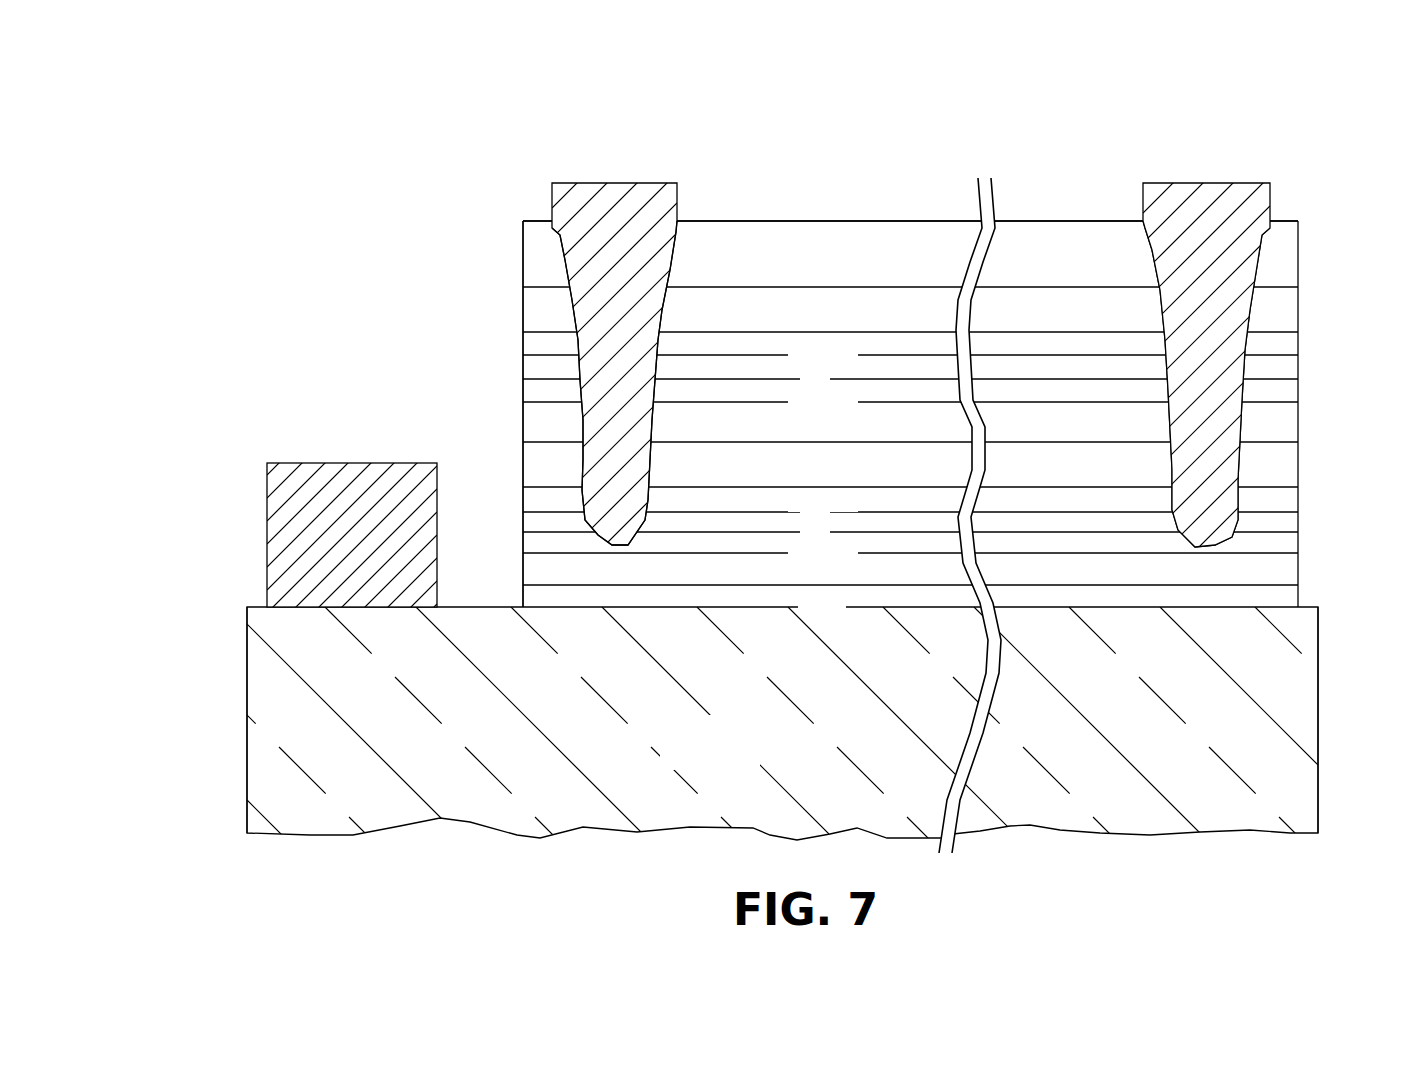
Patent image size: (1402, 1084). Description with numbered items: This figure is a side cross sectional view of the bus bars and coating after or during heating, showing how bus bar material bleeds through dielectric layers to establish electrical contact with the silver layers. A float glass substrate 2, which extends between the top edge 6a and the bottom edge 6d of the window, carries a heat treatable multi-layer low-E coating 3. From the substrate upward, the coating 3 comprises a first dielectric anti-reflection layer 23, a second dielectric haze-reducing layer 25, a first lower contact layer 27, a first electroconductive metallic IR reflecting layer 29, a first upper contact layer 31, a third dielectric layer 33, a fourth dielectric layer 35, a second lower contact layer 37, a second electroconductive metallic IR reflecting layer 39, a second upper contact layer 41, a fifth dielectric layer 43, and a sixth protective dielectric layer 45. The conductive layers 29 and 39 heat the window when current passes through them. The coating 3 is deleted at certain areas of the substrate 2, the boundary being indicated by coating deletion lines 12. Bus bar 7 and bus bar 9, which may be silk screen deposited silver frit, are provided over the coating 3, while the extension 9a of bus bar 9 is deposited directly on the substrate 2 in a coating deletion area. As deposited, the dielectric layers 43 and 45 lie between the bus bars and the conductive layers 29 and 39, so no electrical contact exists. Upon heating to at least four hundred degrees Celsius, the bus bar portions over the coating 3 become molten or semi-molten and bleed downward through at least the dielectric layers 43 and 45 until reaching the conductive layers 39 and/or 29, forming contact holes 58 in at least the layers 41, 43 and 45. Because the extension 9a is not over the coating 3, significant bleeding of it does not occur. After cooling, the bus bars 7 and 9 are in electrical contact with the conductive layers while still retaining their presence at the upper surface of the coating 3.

The substrate 2 is at (1287, 820).
The coating 3 is at (951, 410).
The top edge 6a is at (247, 790).
The bottom edge 6d is at (1320, 745).
The bus bar 7 is at (578, 193).
The bus bar 9 is at (1212, 192).
The extension of bus bar 9a is at (355, 497).
The coating deletion lines 12 is at (521, 338).
The first dielectric anti-reflection layer 23 is at (1257, 593).
The second dielectric haze-reducing layer 25 is at (1122, 572).
The first lower contact layer 27 is at (1287, 544).
The first electroconductive metallic IR reflecting layer 29 is at (1287, 521).
The first upper contact layer 31 is at (1285, 500).
The third dielectric layer 33 is at (1288, 468).
The fourth dielectric layer 35 is at (1118, 423).
The second lower contact layer 37 is at (1058, 397).
The second electroconductive metallic IR reflecting layer 39 is at (1035, 372).
The second upper contact layer 41 is at (1013, 347).
The fifth dielectric layer 43 is at (908, 310).
The sixth protective dielectric layer 45 is at (752, 238).
The contact holes 58 is at (662, 312).